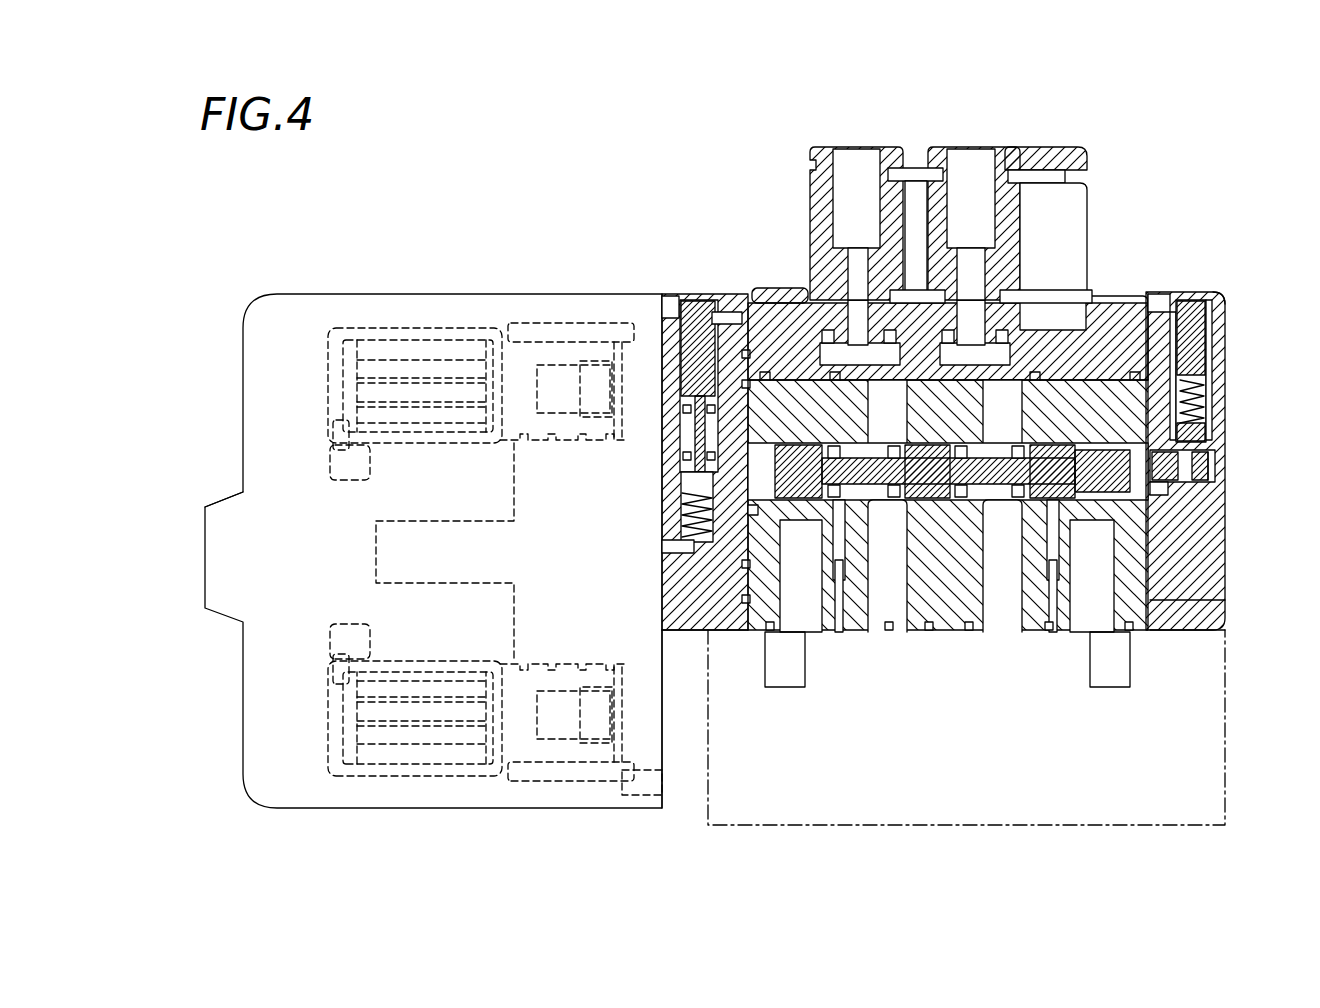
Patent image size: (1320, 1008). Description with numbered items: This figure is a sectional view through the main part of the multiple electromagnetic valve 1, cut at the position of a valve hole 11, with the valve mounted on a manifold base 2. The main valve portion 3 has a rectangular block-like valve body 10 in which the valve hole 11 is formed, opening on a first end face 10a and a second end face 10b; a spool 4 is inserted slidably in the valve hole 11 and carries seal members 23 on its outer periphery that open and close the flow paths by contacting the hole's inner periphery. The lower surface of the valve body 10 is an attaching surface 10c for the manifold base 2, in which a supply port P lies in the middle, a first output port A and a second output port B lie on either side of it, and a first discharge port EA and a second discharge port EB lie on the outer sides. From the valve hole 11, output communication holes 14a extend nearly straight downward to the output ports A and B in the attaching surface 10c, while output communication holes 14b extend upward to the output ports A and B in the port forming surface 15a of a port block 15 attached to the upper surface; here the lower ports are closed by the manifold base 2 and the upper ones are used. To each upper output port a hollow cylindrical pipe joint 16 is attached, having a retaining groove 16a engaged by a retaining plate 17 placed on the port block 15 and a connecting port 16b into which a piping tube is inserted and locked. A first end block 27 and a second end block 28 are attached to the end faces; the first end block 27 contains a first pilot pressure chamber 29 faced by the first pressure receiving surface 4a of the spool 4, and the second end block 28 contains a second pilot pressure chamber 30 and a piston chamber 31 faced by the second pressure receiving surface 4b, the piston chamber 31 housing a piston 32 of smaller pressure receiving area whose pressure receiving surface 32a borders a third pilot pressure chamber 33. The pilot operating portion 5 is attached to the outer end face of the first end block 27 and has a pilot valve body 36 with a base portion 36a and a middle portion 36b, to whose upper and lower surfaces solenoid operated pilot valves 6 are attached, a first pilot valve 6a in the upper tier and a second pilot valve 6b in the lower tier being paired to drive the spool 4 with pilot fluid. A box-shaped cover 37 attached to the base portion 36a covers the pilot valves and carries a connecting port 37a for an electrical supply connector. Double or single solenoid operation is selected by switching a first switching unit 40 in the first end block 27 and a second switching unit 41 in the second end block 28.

The multiple electromagnetic valve 1 is at (662, 127).
The manifold base 2 is at (1215, 790).
The main valve portion 3 is at (988, 404).
The spool 4 is at (1040, 468).
The first pressure receiving surface 4a is at (732, 500).
The second pressure receiving surface 4b is at (1133, 485).
The pilot operating portion 5 is at (428, 520).
The pilot valve 6 is at (477, 551).
The first pilot valve 6a is at (362, 322).
The second pilot valve 6b is at (382, 782).
The valve body 10 is at (988, 545).
The first end face 10a is at (705, 632).
The second end face 10b is at (1150, 600).
The attaching surface 10c is at (1130, 632).
The valve hole 11 is at (1149, 300).
The output communication hole 14a is at (870, 529).
The output communication hole 14b is at (870, 416).
The port block 15 is at (1015, 280).
The port forming surface 15a is at (1117, 302).
The pipe joint 16 is at (944, 189).
The retaining groove 16a is at (790, 288).
The connecting port 16b is at (862, 166).
The retaining plate 17 is at (763, 289).
The seal member 23 is at (917, 520).
The first end block 27 is at (645, 299).
The second end block 28 is at (1218, 318).
The first pilot pressure chamber 29 is at (668, 472).
The second pilot pressure chamber 30 is at (1216, 395).
The piston chamber 31 is at (1180, 486).
The piston 32 is at (1215, 450).
The pressure receiving surface 32a is at (1213, 481).
The third pilot pressure chamber 33 is at (1210, 470).
The pilot valve body 36 is at (480, 660).
The base portion 36a is at (650, 770).
The middle portion 36b is at (380, 553).
The cover 37 is at (290, 296).
The connecting port 37a is at (204, 526).
The first switching unit 40 is at (672, 411).
The second switching unit 41 is at (1233, 405).
The first output port A is at (726, 300).
The second output port B is at (1013, 370).
The supply port P is at (948, 632).
The first discharge port EA is at (812, 632).
The second discharge port EB is at (1078, 632).